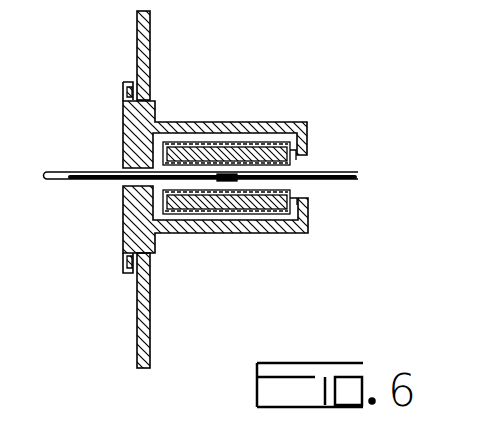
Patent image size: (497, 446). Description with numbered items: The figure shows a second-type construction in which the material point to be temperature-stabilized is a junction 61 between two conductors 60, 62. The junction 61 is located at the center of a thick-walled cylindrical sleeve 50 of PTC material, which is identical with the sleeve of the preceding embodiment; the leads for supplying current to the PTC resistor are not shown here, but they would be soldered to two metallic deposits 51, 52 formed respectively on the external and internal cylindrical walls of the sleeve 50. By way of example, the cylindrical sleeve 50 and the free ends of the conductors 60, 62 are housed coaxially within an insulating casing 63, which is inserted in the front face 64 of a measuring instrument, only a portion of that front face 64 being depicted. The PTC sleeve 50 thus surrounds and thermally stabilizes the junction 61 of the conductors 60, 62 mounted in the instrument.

The sleeve 50 is at (292, 196).
The metallic deposit 51 is at (292, 165).
The metallic deposit 52 is at (287, 233).
The conductor 60 is at (58, 180).
The junction 61 is at (228, 172).
The conductor 62 is at (360, 178).
The insulating casing 63 is at (155, 240).
The front face 64 is at (150, 325).